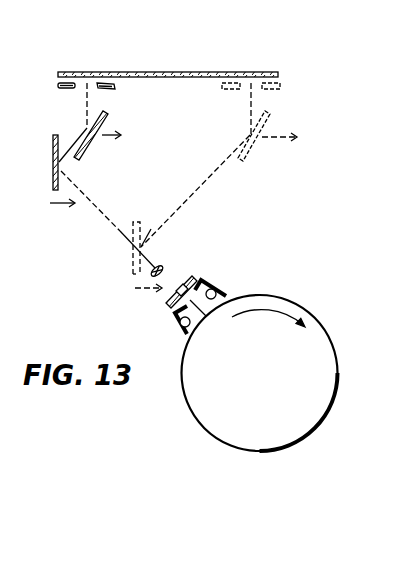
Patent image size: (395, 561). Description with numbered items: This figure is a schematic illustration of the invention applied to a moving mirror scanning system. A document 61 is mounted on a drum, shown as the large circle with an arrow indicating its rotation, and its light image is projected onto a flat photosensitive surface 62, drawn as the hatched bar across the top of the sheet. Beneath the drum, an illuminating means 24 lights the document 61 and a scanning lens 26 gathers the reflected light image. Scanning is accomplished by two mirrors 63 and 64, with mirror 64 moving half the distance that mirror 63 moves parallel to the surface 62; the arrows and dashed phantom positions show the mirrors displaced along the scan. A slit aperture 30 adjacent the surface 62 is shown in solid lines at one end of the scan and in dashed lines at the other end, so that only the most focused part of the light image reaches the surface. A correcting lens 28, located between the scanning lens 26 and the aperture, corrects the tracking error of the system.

The flat photosensitive surface 62 is at (216, 72).
The slit aperture 30 is at (114, 90).
The mirror 63 is at (85, 150).
The mirror 64 is at (56, 191).
The scanning lens 26 is at (163, 259).
The correcting lens 28 is at (180, 282).
The illuminating means 24 is at (265, 271).
The document 61 is at (310, 311).